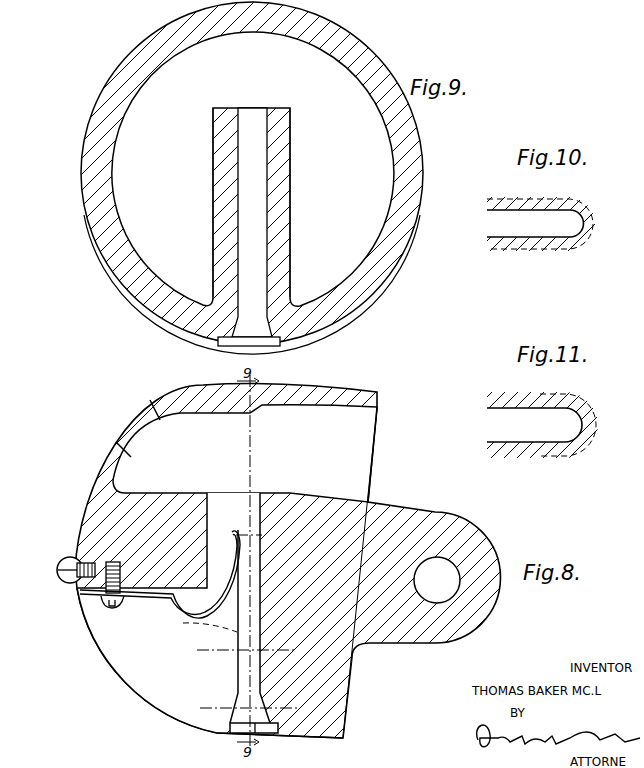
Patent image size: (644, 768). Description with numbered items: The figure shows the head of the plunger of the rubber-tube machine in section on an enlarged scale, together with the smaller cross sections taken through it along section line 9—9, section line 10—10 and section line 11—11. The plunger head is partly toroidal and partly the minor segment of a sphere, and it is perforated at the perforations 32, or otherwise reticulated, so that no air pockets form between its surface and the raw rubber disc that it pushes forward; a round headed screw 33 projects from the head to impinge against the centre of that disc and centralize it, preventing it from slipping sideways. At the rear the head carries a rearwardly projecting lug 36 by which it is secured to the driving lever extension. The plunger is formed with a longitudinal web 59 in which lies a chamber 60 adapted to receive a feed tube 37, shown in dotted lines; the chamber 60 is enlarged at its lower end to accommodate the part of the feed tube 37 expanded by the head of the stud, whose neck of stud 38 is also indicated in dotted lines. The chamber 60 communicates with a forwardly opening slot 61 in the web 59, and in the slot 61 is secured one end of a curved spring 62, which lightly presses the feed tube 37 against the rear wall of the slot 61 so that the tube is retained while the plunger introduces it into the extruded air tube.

In FIG. 9, the section line 9— 9 is at (155, 50).
In FIG. 8, the section line 9— 9 is at (105, 495).
In FIG. 8, the section line 10— 10 is at (246, 650).
In FIG. 8, the section line 11— 11 is at (249, 708).
In FIG. 8, the perforations 32 is at (128, 445).
In FIG. 8, the round headed screw 33 is at (70, 557).
In FIG. 8, the rearwardly projecting lug 36 is at (442, 623).
In FIG. 8, the feed tube 37 is at (197, 627).
In FIG. 8, the neck of stud 38 is at (230, 733).
In FIG. 9, the longitudinal web 59 is at (278, 213).
In FIG. 8, the longitudinal web 59 is at (328, 668).
In FIG. 9, the chamber 60 is at (250, 203).
In FIG. 8, the slot 61 is at (97, 623).
In FIG. 8, the curved spring 62 is at (232, 540).